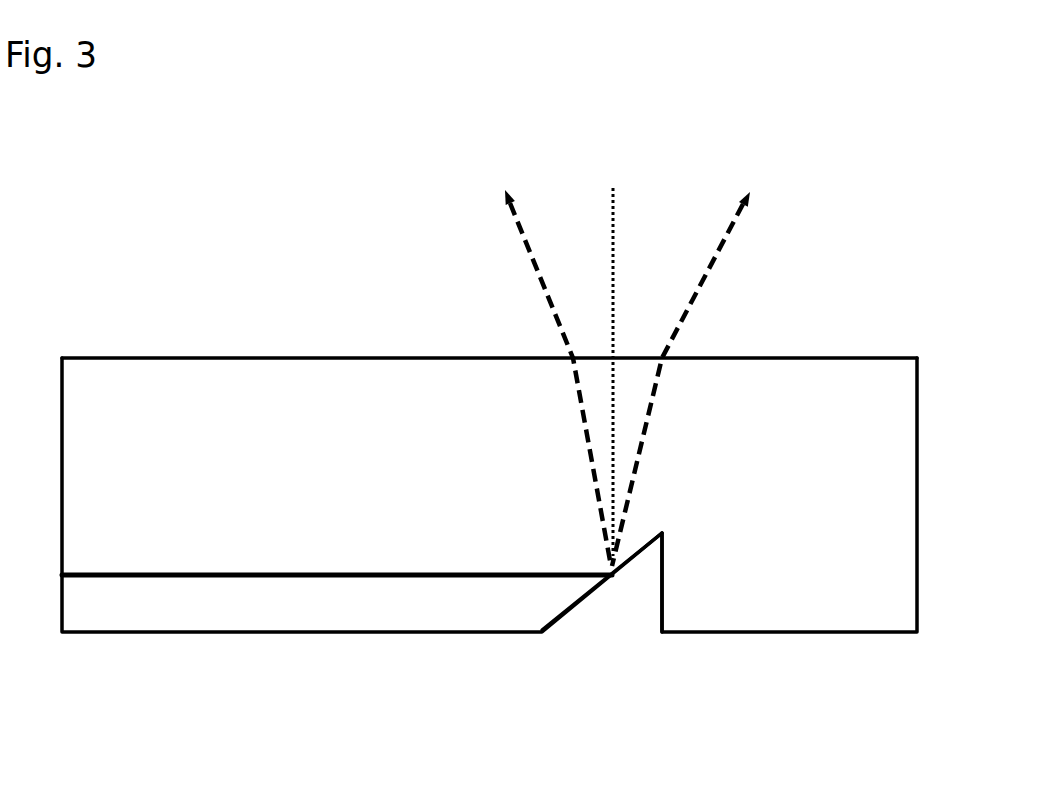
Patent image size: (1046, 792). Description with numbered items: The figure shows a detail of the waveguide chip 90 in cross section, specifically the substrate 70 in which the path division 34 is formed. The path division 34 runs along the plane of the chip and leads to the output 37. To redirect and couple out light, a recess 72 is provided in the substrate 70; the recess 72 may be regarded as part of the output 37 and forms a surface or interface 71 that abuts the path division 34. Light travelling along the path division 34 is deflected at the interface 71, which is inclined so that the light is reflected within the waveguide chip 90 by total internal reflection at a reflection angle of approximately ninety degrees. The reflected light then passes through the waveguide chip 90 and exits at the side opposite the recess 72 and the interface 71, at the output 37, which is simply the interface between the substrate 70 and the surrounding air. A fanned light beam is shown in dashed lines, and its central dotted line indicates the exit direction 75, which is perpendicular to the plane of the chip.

The waveguide chip 90 is at (182, 357).
The substrate 70 is at (816, 501).
The path division 34 is at (288, 578).
The surface or interface 71 is at (563, 613).
The recess 72 is at (620, 612).
The exit direction 75 is at (615, 201).
The output 37 is at (586, 357).